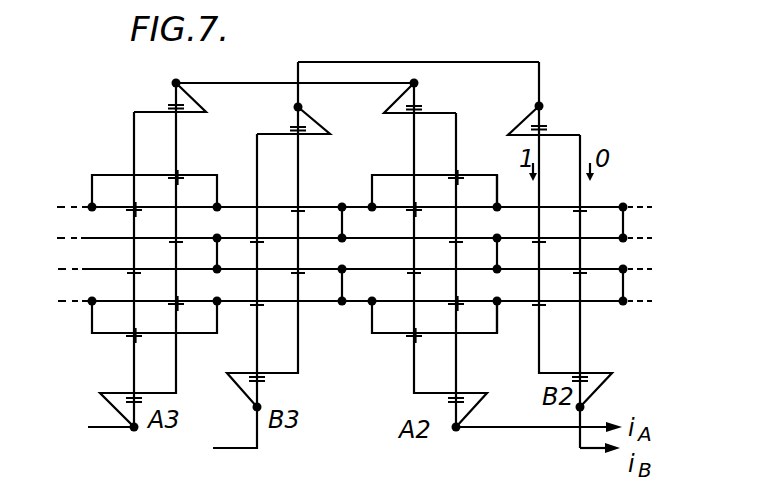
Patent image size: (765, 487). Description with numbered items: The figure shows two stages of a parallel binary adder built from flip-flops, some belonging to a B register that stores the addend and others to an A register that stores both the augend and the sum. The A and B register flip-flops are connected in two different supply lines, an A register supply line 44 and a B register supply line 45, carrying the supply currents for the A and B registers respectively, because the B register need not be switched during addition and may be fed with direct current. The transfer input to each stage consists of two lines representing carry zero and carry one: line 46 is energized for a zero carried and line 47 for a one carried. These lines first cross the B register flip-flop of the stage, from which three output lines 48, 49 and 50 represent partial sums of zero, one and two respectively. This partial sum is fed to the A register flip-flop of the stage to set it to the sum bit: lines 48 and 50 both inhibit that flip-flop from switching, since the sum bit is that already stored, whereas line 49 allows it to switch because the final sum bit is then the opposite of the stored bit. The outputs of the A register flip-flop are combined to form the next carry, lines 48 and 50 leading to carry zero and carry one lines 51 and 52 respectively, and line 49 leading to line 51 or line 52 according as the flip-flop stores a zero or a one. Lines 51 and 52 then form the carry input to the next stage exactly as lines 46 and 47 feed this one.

The output conductor for current iA 44 is at (596, 425).
The output conductor for current iB 45 is at (578, 441).
The carry "0" line 46 is at (629, 273).
The carry "1" line 47 is at (628, 221).
The output line 48 is at (499, 304).
The output line 49 is at (504, 244).
The output line 50 is at (497, 207).
The carry "0" line 51 is at (343, 273).
The carry "1" line 52 is at (343, 222).